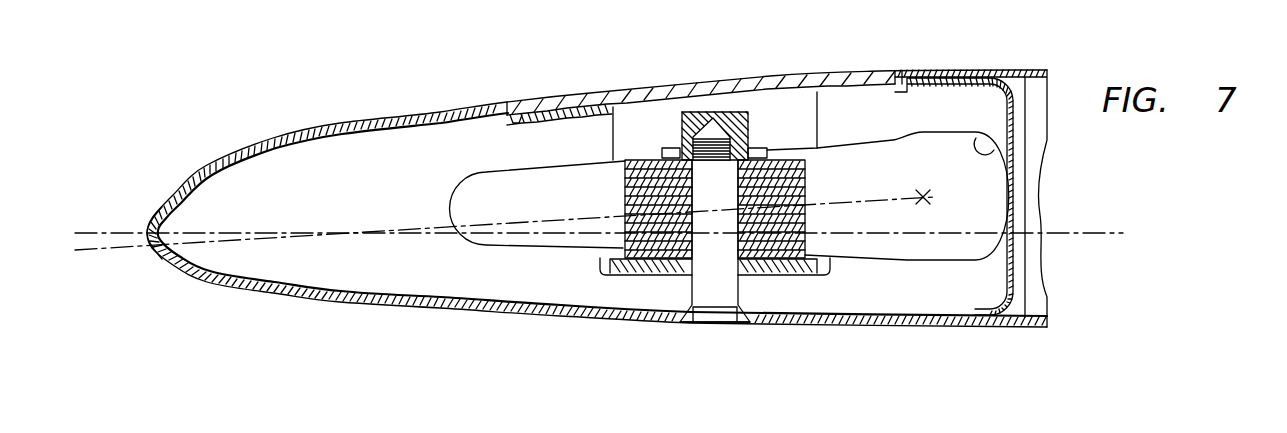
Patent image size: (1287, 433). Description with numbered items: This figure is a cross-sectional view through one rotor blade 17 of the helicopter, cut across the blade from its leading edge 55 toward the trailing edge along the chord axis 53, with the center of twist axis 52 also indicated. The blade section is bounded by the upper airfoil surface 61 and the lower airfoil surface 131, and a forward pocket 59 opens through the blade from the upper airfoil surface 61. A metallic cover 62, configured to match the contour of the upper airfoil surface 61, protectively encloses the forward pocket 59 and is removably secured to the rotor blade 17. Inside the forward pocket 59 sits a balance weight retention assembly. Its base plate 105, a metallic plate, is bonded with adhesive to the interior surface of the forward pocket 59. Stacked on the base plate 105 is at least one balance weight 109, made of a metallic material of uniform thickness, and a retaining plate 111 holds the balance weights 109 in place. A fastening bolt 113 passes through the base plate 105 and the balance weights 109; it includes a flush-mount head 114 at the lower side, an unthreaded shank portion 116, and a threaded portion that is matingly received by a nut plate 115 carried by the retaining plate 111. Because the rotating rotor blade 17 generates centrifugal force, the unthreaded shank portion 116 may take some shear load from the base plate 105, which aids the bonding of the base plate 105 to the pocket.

The rotor blade 17 is at (578, 203).
The leading edge 55 is at (157, 252).
The lower airfoil surface 131 is at (367, 300).
The cover 62 is at (578, 97).
The upper airfoil surface 61 is at (997, 68).
The forward pocket 59 is at (987, 140).
The center of twist axis 52 is at (923, 197).
The chord axis 53 is at (1102, 232).
The balance weight 109 is at (625, 196).
The base plate 105 is at (600, 262).
The nut plate 115 is at (681, 127).
The retaining plate 111 is at (778, 148).
The unthreaded shank portion 116 is at (730, 274).
The fastening bolt 113 is at (694, 329).
The flush-mount head 114 is at (718, 316).